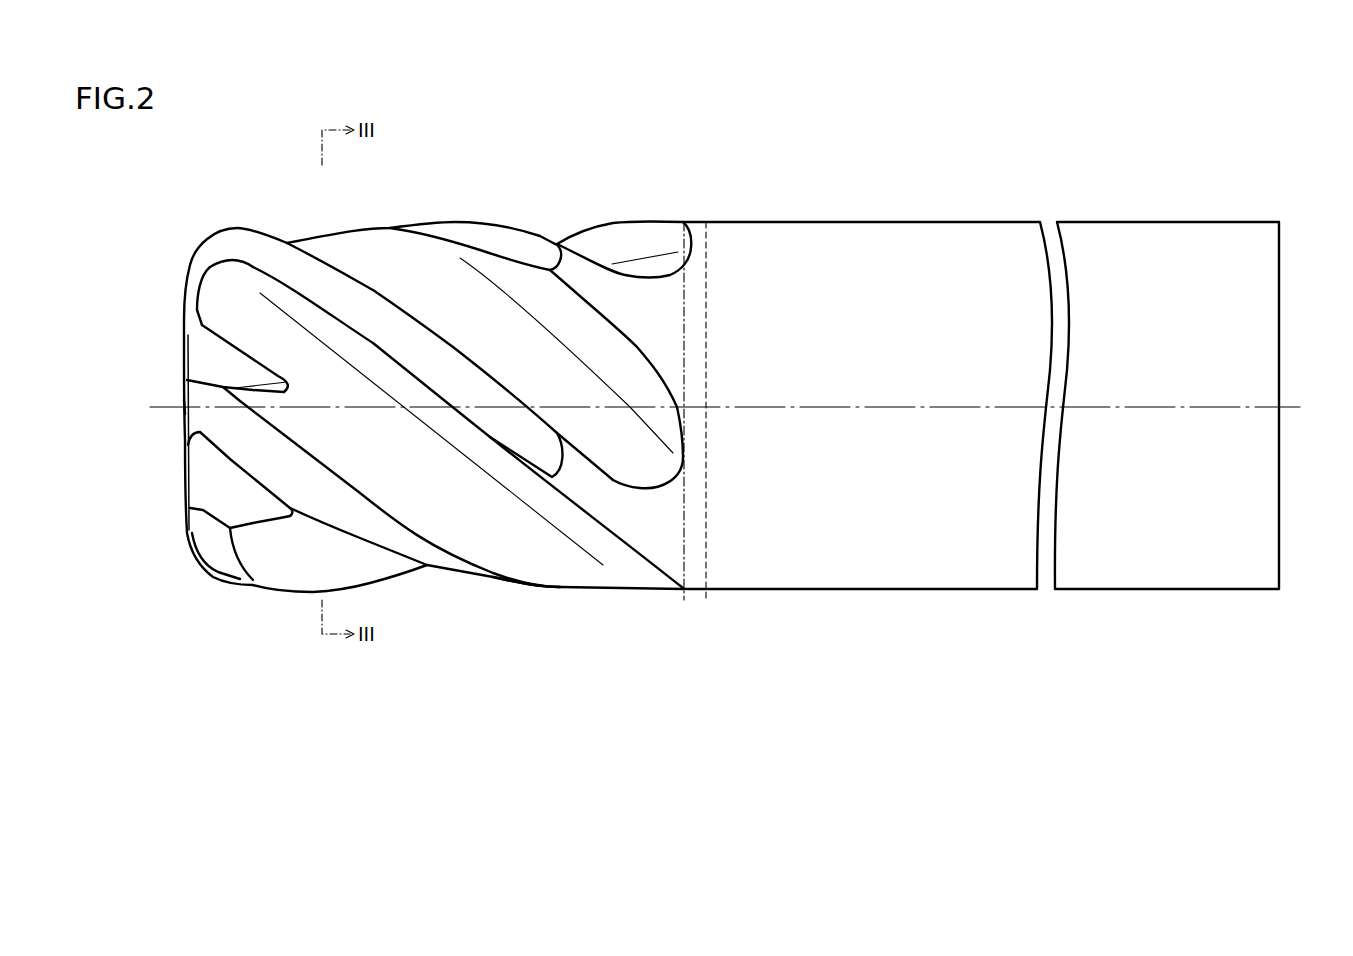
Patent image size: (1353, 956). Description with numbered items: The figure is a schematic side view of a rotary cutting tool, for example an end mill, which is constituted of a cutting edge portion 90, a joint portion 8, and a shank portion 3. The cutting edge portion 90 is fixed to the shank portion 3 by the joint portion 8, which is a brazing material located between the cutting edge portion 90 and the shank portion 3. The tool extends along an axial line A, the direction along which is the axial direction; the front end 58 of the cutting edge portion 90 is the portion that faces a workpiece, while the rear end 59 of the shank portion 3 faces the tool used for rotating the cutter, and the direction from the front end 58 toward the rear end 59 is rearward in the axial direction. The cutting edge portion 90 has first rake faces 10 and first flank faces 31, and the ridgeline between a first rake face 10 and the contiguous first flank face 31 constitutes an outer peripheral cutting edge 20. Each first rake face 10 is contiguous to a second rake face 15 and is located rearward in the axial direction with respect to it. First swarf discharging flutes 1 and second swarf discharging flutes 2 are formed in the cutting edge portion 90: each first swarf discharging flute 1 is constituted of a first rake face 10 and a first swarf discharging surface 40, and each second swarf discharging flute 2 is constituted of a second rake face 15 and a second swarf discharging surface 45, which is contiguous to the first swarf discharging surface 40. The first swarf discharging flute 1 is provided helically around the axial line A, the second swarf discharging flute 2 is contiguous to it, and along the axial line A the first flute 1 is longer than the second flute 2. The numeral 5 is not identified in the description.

The first swarf discharging flute 1 is at (386, 187).
The second swarf discharging flute 2 is at (127, 312).
The shank portion 3 is at (892, 257).
The chip pocket 5 is at (413, 312).
The joint portion 8 is at (698, 592).
The first rake face 10 is at (365, 470).
The second rake face 15 is at (217, 383).
The outer peripheral cutting edge 20 is at (308, 450).
The first flank face 31 is at (447, 373).
The first swarf discharging surface 40 is at (322, 330).
The second swarf discharging surface 45 is at (223, 353).
The front end 58 is at (187, 407).
The rear end 59 is at (1281, 407).
The cutting edge portion 90 is at (513, 597).
The axial line A is at (838, 415).